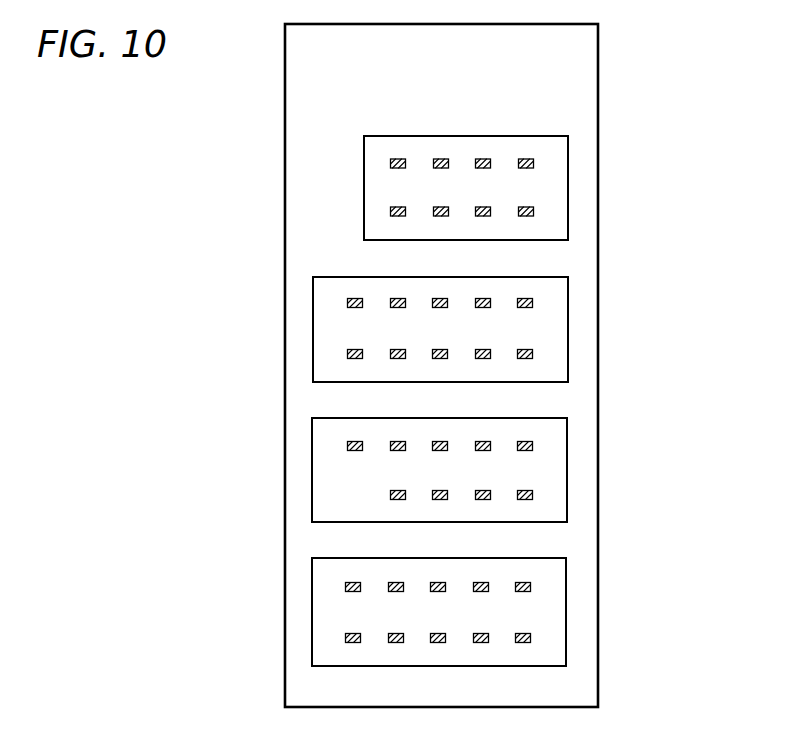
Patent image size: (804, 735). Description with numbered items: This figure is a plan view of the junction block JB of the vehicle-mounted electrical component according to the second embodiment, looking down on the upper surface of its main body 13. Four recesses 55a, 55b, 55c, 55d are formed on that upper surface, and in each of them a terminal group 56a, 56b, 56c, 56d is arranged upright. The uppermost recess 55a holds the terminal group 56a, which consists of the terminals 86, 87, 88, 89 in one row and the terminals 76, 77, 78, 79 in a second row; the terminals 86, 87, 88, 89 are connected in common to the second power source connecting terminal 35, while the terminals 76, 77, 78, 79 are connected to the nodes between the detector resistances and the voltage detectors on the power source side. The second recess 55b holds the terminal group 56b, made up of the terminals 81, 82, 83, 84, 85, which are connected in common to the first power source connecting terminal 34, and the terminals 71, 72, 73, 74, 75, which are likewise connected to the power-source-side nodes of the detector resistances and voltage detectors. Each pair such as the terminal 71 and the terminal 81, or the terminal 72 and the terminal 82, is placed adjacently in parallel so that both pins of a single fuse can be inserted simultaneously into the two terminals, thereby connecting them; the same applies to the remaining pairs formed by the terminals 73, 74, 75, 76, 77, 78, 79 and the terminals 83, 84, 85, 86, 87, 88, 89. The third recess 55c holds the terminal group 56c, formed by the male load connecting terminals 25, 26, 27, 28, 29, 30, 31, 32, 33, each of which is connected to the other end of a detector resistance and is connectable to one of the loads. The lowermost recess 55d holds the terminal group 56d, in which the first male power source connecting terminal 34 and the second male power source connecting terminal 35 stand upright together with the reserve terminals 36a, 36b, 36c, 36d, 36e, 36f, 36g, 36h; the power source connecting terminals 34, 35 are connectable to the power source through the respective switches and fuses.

The junction block JB is at (638, 75).
The main body 13 is at (285, 100).
The recess 55a is at (568, 188).
The recess 55b is at (568, 328).
The recess 55c is at (567, 469).
The recess 55d is at (566, 609).
The terminal group 56a is at (369, 183).
The terminal group 56b is at (316, 323).
The terminal group 56c is at (316, 463).
The terminal group 56d is at (316, 605).
The terminal 86 is at (403, 158).
The terminal 87 is at (446, 158).
The terminal 88 is at (488, 158).
The terminal 89 is at (531, 158).
The terminal 76 is at (403, 206).
The terminal 77 is at (446, 206).
The terminal 78 is at (488, 206).
The terminal 79 is at (531, 206).
The terminal 81 is at (360, 298).
The terminal 82 is at (403, 298).
The terminal 83 is at (445, 298).
The terminal 84 is at (488, 298).
The terminal 85 is at (530, 298).
The terminal 71 is at (360, 349).
The terminal 72 is at (403, 349).
The terminal 73 is at (445, 349).
The terminal 74 is at (488, 349).
The terminal 75 is at (530, 349).
The male load connecting terminal 25 is at (360, 441).
The male load connecting terminal 26 is at (403, 441).
The male load connecting terminal 27 is at (403, 490).
The male load connecting terminal 28 is at (445, 441).
The male load connecting terminal 29 is at (445, 490).
The male load connecting terminal 30 is at (488, 441).
The male load connecting terminal 31 is at (488, 490).
The male load connecting terminal 32 is at (530, 441).
The male load connecting terminal 33 is at (530, 490).
The first male power source connecting terminal 34 is at (358, 582).
The second male power source connecting terminal 35 is at (348, 643).
The reserve terminal 36a is at (401, 582).
The reserve terminal 36b is at (391, 643).
The reserve terminal 36c is at (443, 582).
The reserve terminal 36d is at (433, 643).
The reserve terminal 36e is at (486, 582).
The reserve terminal 36f is at (476, 643).
The reserve terminal 36g is at (528, 582).
The reserve terminal 36h is at (518, 643).